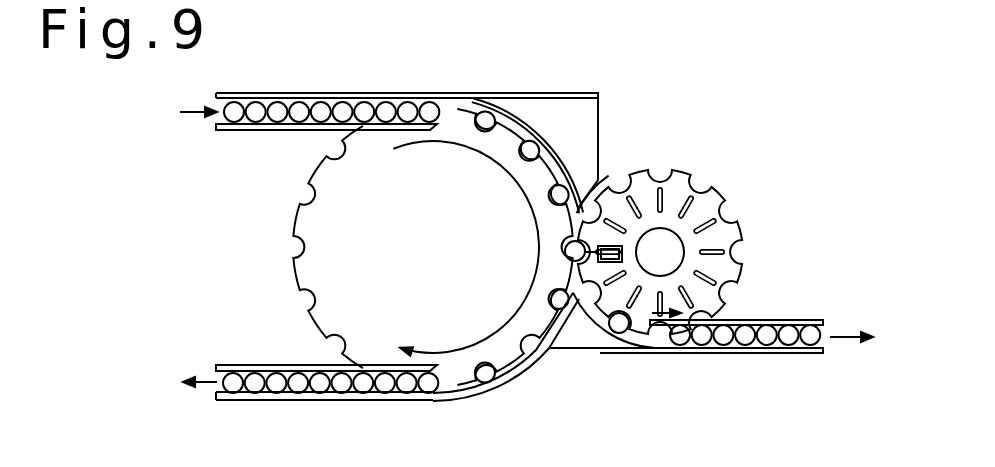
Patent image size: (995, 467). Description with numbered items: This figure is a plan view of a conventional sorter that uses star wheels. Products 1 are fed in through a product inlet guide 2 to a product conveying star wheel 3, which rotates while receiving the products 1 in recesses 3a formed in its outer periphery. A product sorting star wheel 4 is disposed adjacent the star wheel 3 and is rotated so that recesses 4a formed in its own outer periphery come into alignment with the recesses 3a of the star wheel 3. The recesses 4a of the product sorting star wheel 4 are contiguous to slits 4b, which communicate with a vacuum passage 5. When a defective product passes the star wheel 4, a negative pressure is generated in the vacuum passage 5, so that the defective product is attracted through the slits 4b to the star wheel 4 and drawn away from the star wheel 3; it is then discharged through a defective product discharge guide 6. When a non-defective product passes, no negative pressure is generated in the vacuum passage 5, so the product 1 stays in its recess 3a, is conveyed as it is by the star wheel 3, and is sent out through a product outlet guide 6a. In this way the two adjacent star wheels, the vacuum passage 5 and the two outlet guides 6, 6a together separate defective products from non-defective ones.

The products 1 is at (284, 110).
The product inlet guide 2 is at (340, 93).
The product conveying star wheel 3 is at (390, 245).
The recesses 3a is at (487, 123).
The product sorting star wheel 4 is at (686, 265).
The recesses 4a is at (753, 208).
The slits 4b is at (702, 195).
The vacuum passage 5 is at (601, 264).
The defective product discharge guide 6 is at (744, 357).
The product outlet guide 6a is at (317, 404).